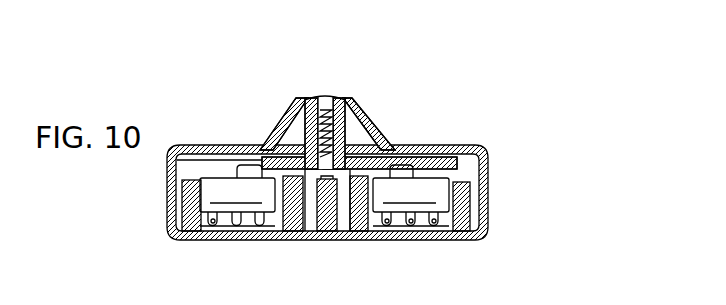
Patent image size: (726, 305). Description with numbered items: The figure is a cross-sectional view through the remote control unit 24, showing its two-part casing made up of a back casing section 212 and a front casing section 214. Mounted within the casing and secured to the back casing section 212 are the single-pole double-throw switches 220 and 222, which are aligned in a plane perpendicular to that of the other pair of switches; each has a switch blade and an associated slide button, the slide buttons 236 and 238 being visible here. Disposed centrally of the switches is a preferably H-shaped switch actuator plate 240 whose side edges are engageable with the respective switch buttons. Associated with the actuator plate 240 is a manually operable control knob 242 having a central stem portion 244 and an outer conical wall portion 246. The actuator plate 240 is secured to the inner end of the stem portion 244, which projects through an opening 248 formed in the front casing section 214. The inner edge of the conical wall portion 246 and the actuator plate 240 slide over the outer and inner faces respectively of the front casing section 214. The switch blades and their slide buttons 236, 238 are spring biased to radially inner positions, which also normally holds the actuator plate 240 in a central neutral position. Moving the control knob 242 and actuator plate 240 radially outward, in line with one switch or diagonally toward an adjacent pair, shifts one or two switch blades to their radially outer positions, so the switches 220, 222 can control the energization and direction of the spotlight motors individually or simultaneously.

The remote control unit 24 is at (348, 107).
The back casing section 212 is at (290, 238).
The front casing section 214 is at (488, 163).
The single-pole double-throw switch 220 is at (237, 202).
The single-pole double-throw switch 222 is at (411, 202).
The slide button 236 is at (248, 167).
The slide button 238 is at (414, 167).
The switch actuator plate 240 is at (310, 185).
The control knob 242 is at (358, 92).
The stem portion 244 is at (378, 121).
The conical wall portion 246 is at (350, 118).
The opening 248 is at (298, 134).